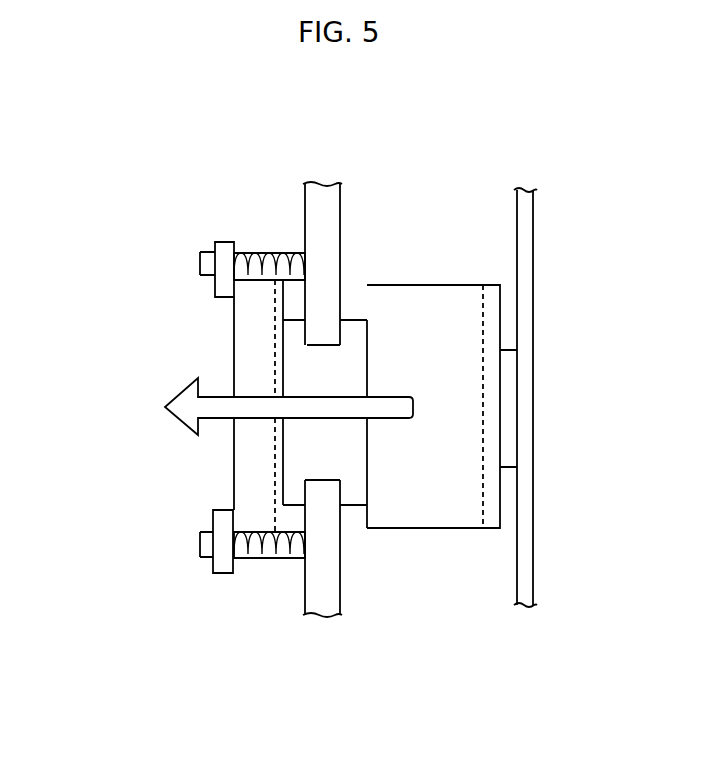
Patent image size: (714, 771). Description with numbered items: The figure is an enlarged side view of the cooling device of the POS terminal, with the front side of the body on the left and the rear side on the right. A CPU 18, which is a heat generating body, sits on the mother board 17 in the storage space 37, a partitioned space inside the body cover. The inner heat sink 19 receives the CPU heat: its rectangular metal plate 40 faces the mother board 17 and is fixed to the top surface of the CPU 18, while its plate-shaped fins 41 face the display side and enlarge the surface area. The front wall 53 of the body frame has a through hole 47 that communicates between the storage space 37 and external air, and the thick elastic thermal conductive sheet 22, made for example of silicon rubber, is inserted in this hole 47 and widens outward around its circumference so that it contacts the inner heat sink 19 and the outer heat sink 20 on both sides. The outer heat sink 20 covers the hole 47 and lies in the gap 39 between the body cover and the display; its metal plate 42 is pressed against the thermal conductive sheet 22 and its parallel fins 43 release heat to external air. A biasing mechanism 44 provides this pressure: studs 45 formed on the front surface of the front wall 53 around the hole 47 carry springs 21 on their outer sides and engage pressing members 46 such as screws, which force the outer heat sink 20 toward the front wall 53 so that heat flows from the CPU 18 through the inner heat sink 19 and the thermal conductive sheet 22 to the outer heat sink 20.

The mother board 17 is at (525, 232).
The CPU 18 is at (512, 382).
The inner heat sink 19 is at (435, 365).
The outer heat sink 20 is at (209, 406).
The springs 21 is at (269, 403).
The thermal conductive sheet 22 is at (353, 327).
The storage space 37 is at (594, 93).
The gap 39 is at (142, 100).
The metal plate 40 is at (485, 285).
The fins 41 is at (426, 302).
The metal plate 42 is at (280, 380).
The fins 43 is at (255, 347).
The biasing mechanism 44 is at (224, 407).
The studs 45 is at (215, 248).
The pressing members 46 is at (224, 243).
The hole 47 is at (352, 510).
The front wall 53 is at (325, 205).